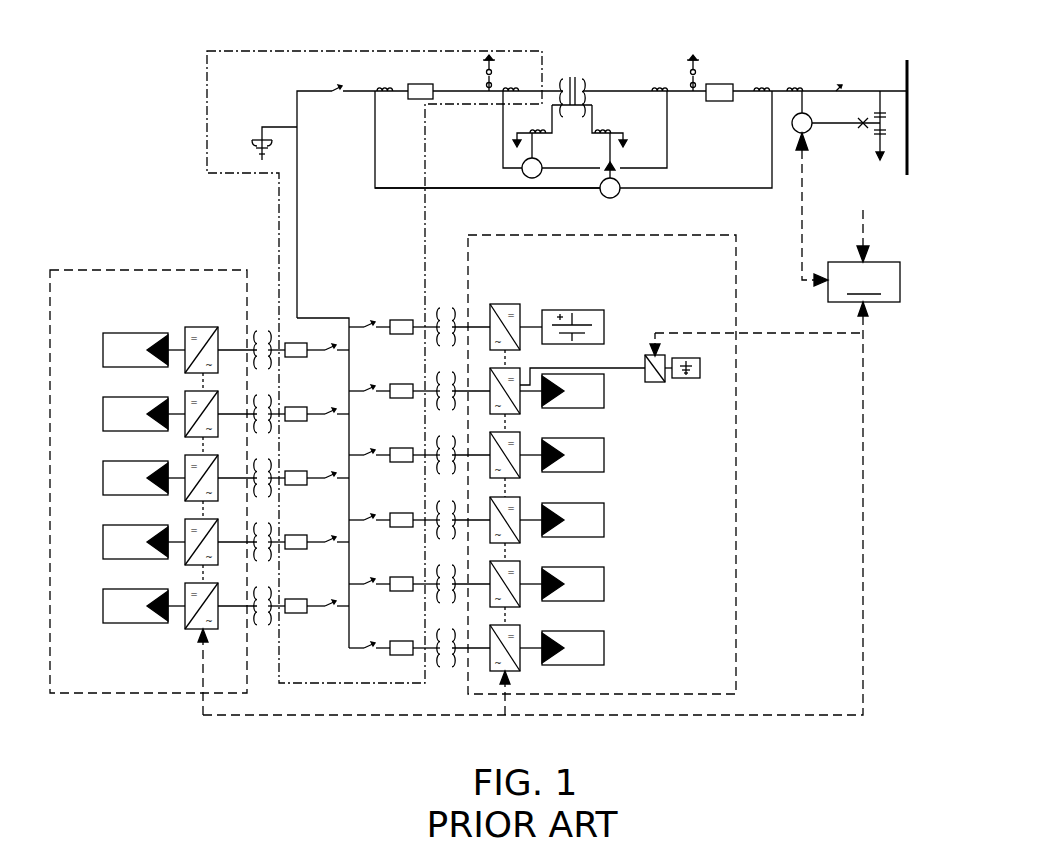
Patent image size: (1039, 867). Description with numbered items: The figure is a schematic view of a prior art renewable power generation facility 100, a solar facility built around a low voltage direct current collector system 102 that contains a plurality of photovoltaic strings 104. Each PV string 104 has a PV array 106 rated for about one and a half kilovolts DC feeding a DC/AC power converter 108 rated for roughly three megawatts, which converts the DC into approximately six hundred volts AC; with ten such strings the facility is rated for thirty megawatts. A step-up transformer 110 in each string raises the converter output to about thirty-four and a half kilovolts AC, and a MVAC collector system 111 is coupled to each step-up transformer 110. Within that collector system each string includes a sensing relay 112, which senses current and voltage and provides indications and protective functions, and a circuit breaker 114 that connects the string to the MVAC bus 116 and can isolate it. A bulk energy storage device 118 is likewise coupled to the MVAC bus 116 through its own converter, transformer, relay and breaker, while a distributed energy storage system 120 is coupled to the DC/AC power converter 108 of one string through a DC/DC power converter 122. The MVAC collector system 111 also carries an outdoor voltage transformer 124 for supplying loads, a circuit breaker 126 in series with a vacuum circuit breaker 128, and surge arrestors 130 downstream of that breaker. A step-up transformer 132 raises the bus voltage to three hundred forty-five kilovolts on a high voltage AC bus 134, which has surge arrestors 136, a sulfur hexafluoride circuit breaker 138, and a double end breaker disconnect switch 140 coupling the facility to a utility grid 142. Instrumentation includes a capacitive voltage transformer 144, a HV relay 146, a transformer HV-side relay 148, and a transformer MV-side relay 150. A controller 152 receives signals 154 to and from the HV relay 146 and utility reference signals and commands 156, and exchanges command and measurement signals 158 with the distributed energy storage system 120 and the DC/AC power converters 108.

The renewable power generation facility 100 is at (186, 204).
The low voltage direct current collector system 102 is at (138, 270).
The photovoltaic string 104 is at (187, 304).
The photovoltaic array 106 is at (604, 648).
The DC/AC power converter 108 is at (522, 672).
The step-up transformer 110 is at (445, 670).
The medium voltage alternating current collector system 111 is at (207, 85).
The sensing relay 112 is at (401, 655).
The circuit breaker 114 is at (372, 652).
The MVAC bus 116 is at (297, 215).
The bulk energy storage device 118 is at (550, 310).
The distributed energy storage system 120 is at (686, 358).
The DC/DC power converter 122 is at (645, 358).
The outdoor voltage transformer 124 is at (262, 127).
The circuit breaker 126 is at (337, 95).
The vacuum circuit breaker 128 is at (420, 84).
The surge arrestor 130 is at (486, 70).
The step-up transformer 132 is at (572, 78).
The high voltage AC bus 134 is at (628, 90).
The surge arrestor 136 is at (692, 63).
The sulfur hexafluoride circuit breaker 138 is at (720, 84).
The double end breaker disconnect switch 140 is at (840, 90).
The utility grid 142 is at (908, 125).
The capacitive voltage transformer 144 is at (863, 128).
The HV relay 146 is at (797, 131).
The transformer HV-side relay 148 is at (610, 198).
The transformer MV-side relay 150 is at (532, 178).
The controller 152 is at (864, 282).
The signals to and from HV relay 154 is at (808, 190).
The utility reference signals and commands 156 is at (867, 222).
The command and measurement signals 158 is at (863, 372).